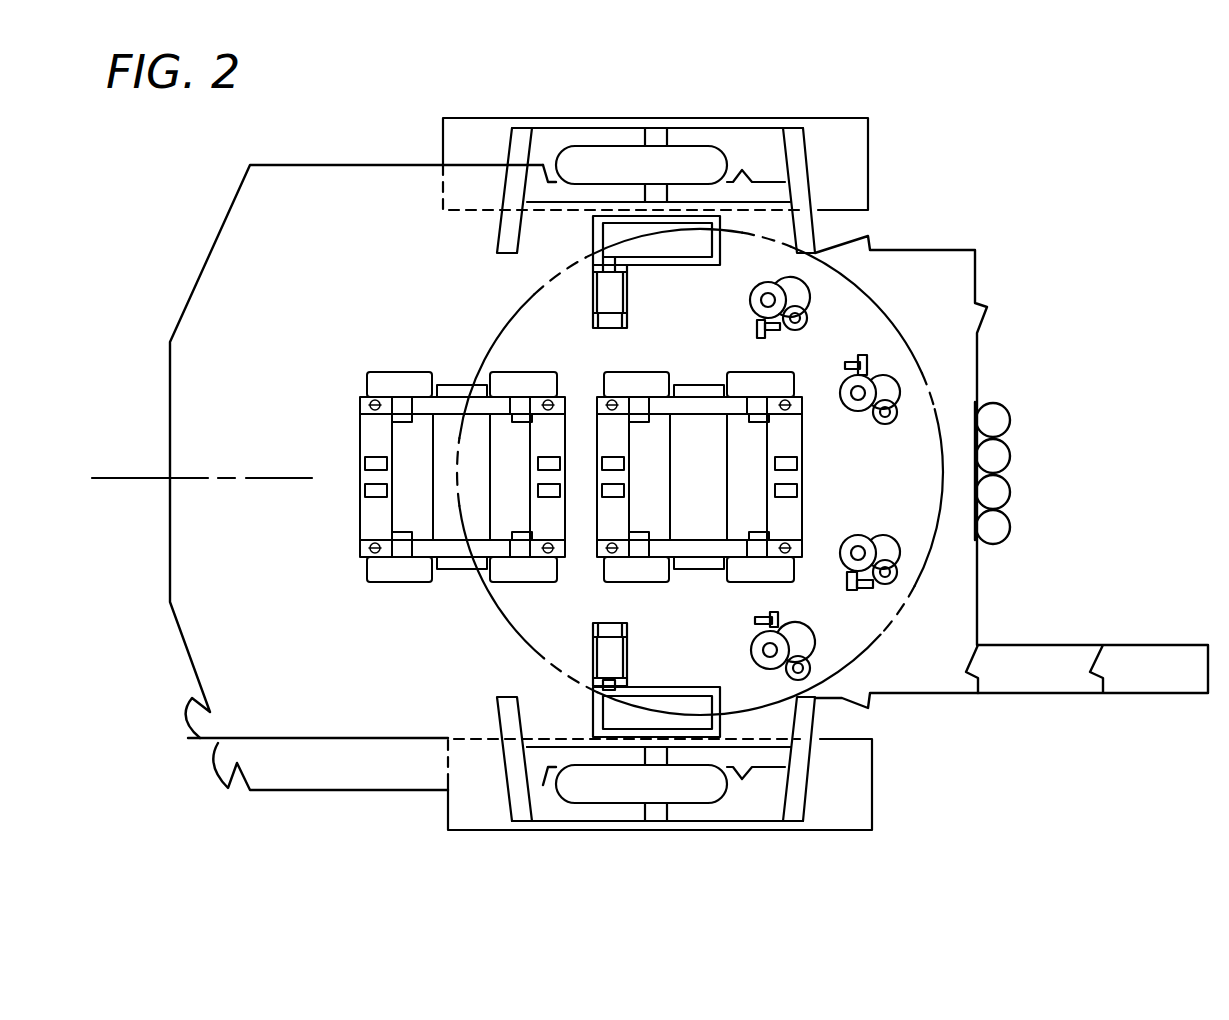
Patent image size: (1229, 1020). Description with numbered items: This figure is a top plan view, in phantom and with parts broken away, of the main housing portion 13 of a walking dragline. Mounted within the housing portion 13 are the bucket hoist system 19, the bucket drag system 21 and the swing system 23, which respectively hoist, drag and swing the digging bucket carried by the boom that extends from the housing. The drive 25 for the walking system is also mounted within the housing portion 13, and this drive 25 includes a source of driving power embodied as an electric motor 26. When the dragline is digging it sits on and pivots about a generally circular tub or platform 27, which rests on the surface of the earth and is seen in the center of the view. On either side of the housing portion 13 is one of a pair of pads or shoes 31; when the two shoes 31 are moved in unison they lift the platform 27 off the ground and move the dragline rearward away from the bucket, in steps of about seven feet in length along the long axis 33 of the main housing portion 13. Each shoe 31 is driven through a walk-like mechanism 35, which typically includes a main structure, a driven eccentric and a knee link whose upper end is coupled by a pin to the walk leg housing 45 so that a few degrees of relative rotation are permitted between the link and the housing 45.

The main housing portion 13 is at (307, 177).
The bucket hoist system 19 is at (770, 368).
The bucket drag system 21 is at (412, 372).
The swing system 23 is at (812, 291).
The drive 25 is at (627, 312).
The electric motor 26 is at (604, 660).
The platform 27 is at (893, 327).
The shoes 31 is at (868, 142).
The long axis 33 is at (185, 478).
The walk-like mechanism 35 is at (710, 812).
The walk leg housing 45 is at (590, 795).